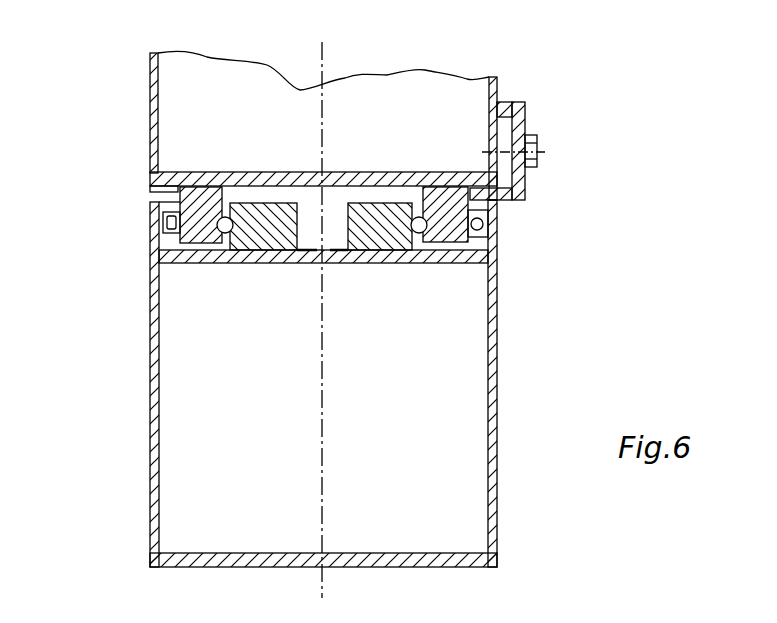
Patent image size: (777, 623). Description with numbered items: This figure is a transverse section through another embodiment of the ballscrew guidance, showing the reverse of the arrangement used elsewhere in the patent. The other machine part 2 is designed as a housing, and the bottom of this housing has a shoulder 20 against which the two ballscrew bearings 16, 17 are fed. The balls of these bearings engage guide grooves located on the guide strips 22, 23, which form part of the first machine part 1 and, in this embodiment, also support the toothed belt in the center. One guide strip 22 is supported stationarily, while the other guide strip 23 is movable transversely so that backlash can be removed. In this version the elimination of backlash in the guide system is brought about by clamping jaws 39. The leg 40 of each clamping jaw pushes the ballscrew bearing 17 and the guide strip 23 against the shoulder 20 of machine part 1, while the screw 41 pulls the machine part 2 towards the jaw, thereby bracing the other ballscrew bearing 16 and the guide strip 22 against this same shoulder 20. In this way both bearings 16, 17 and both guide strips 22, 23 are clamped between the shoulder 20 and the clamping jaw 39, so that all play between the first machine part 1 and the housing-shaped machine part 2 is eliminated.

The first machine part 1 is at (150, 397).
The other machine part 2 is at (150, 113).
The ballscrew bearing 16 is at (190, 263).
The ballscrew bearing 17 is at (445, 263).
The shoulder 20 is at (311, 250).
The guide strip 22 is at (264, 263).
The guide strip 23 is at (370, 263).
The clamping jaw 39 is at (525, 110).
The leg 40 is at (514, 200).
The screw 41 is at (532, 160).